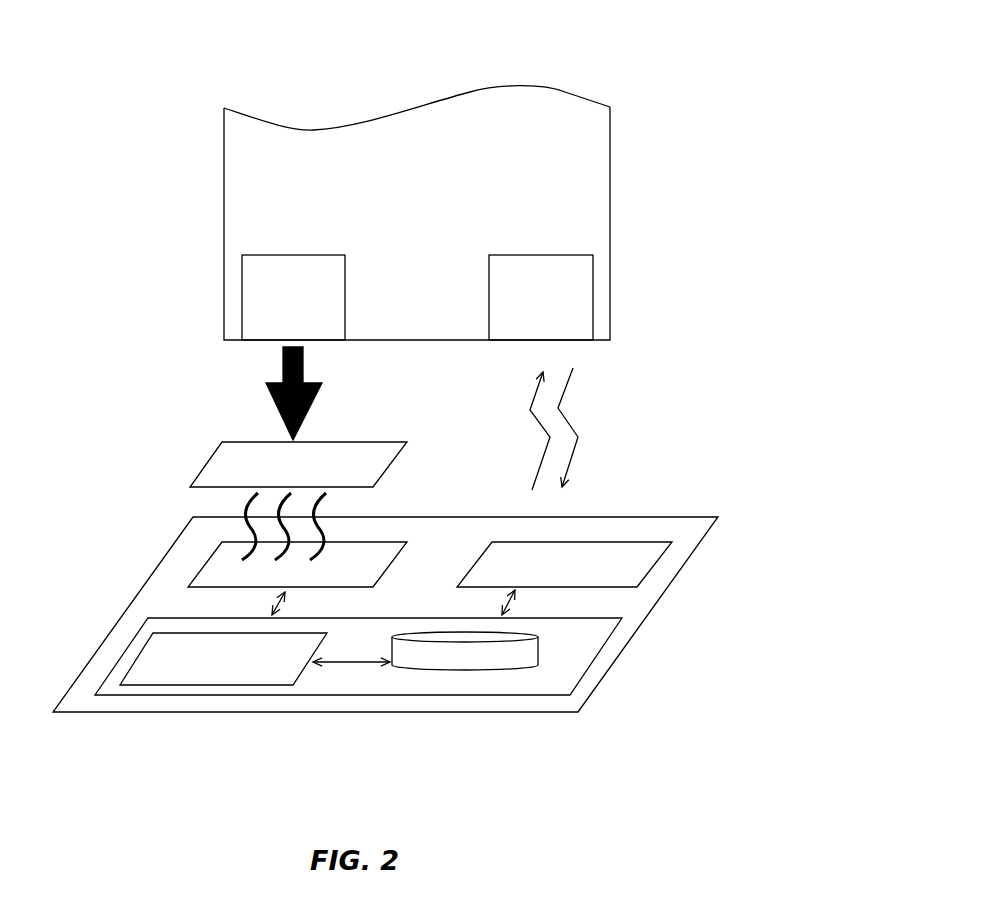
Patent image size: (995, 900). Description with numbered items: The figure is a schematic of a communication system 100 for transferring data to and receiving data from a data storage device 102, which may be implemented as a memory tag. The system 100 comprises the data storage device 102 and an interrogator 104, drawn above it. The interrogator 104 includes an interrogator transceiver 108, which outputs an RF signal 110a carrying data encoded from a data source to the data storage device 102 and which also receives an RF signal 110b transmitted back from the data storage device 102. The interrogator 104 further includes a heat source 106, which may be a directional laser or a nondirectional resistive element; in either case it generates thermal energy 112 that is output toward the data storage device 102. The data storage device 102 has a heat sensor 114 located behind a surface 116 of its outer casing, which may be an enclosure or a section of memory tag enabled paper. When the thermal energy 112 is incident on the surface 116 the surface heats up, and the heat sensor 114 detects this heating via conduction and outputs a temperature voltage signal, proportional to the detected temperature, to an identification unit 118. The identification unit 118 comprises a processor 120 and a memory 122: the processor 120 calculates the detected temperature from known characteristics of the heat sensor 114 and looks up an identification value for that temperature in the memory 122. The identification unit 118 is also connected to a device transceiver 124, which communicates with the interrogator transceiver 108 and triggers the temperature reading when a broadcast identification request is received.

The system 100 is at (660, 92).
The data storage device 102 is at (555, 718).
The interrogator 104 is at (220, 158).
The heat source 106 is at (240, 300).
The interrogator transceiver 108 is at (597, 297).
The RF signal 110a is at (567, 407).
The RF signal 110b is at (530, 397).
The thermal energy 112 is at (282, 373).
The heat sensor 114 is at (387, 537).
The surface 116 is at (205, 457).
The identification unit 118 is at (602, 648).
The processor 120 is at (202, 672).
The memory 122 is at (462, 673).
The device transceiver 124 is at (647, 575).